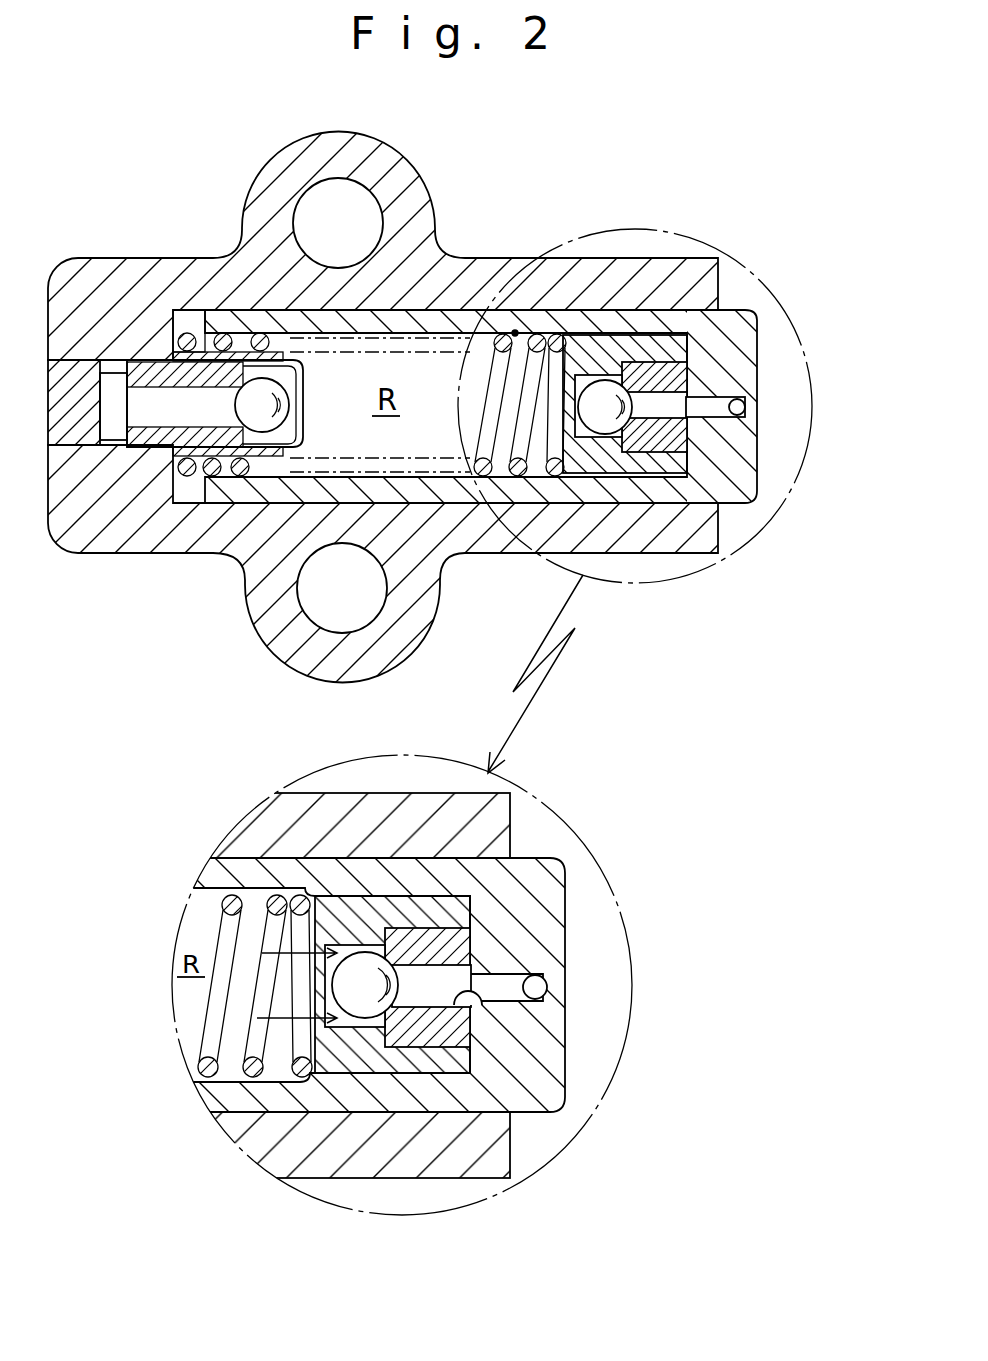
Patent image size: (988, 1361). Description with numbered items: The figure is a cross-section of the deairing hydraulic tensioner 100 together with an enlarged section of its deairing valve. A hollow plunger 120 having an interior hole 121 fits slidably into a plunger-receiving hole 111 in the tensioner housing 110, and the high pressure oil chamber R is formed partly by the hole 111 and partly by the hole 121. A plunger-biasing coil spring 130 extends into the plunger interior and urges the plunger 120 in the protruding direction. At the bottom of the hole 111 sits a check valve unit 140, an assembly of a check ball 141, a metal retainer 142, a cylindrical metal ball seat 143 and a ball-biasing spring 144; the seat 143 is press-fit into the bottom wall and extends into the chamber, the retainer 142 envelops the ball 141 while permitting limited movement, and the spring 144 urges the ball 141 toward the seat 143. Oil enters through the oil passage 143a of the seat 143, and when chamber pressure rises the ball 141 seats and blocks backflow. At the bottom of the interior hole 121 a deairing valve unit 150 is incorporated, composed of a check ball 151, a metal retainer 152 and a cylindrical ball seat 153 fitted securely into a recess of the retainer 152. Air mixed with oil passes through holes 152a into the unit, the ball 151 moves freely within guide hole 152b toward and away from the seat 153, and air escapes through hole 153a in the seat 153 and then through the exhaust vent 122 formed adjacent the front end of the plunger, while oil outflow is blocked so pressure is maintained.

The tensioner 100 is at (462, 150).
The tensioner housing 110 is at (563, 280).
The plunger-receiving hole 111 is at (190, 314).
The plunger 120 is at (733, 350).
The interior hole 121 is at (515, 331).
The exhaust vent 122 is at (745, 407).
The plunger-biasing coil spring 130 is at (517, 473).
The check valve unit 140 is at (243, 603).
The check ball 141 is at (178, 452).
The metal retainer 142 is at (155, 445).
The cylindrical metal ball seat 143 is at (113, 510).
The oil passage 143a is at (140, 383).
The ball-biasing spring 144 is at (258, 477).
The deairing valve unit 150 is at (778, 640).
The check ball 151 is at (600, 427).
The metal retainer 152 is at (640, 457).
The holes 152a is at (297, 1028).
The guide hole 152b is at (345, 1030).
The cylindrical ball seat 153 is at (665, 450).
The hole 153a is at (479, 1002).